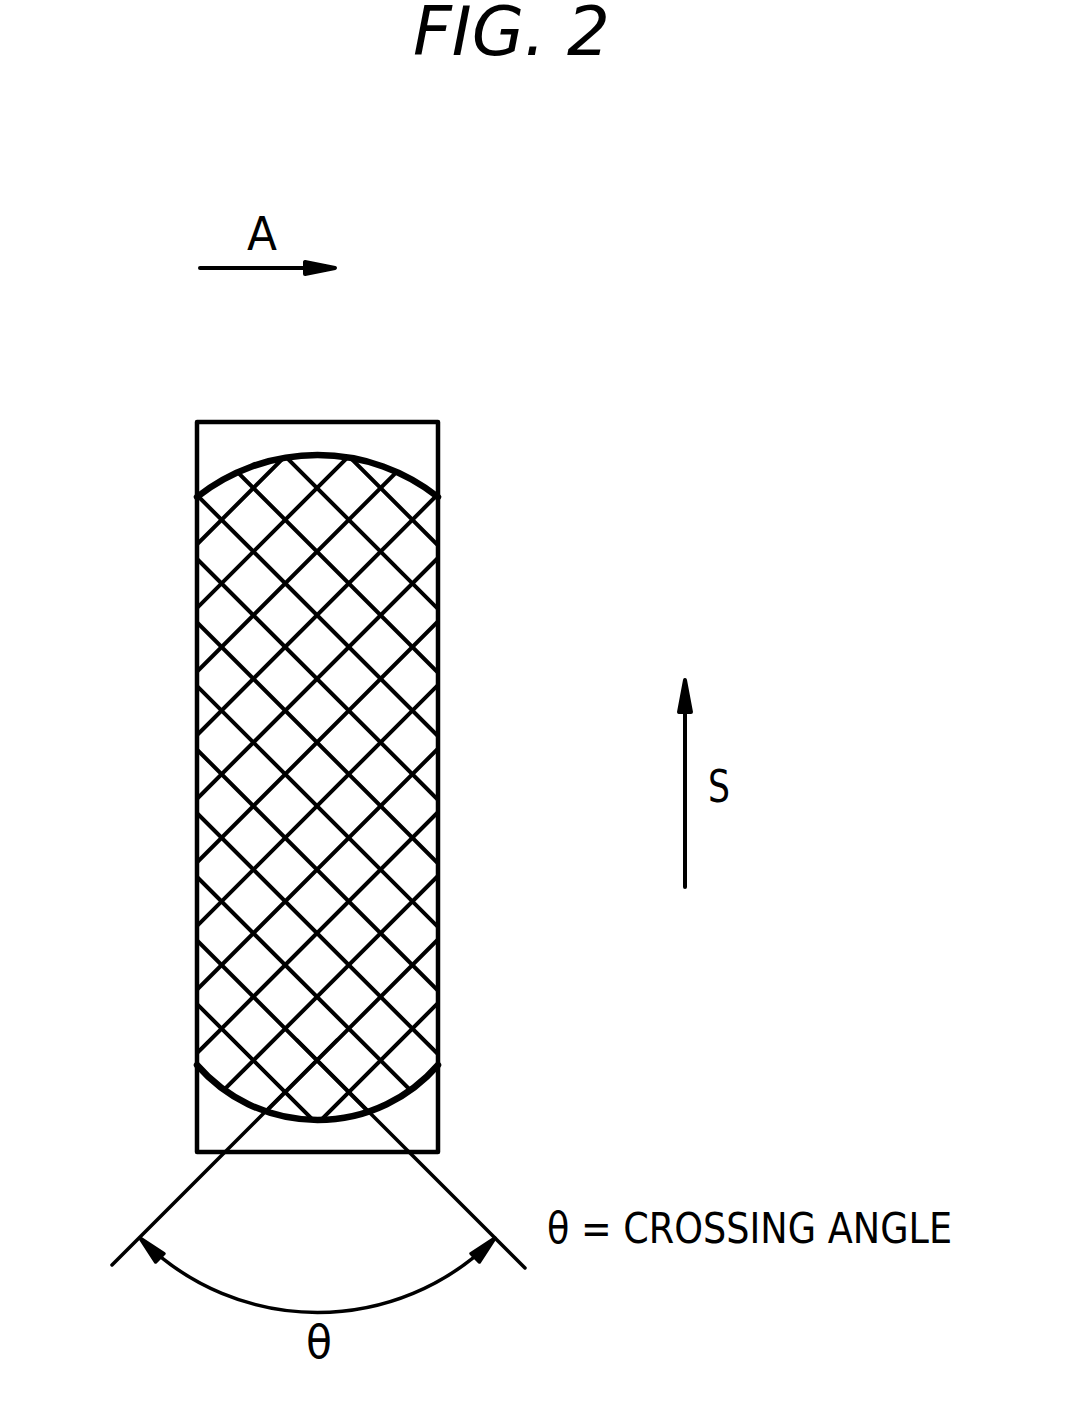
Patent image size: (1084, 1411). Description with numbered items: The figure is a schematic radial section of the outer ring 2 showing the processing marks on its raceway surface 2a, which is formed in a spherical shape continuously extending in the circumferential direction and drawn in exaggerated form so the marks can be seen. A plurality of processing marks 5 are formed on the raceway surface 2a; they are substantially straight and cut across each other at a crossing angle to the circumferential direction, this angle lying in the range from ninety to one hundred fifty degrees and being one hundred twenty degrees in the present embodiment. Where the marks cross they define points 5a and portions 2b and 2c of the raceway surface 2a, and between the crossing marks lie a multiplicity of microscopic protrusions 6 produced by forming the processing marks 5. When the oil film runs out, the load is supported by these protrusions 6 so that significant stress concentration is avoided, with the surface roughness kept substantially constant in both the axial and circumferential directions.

The outer ring 2 is at (413, 445).
The raceway surface 2a is at (317, 488).
The body portion of stent 2b is at (204, 743).
The axial direction of stent 2c is at (301, 592).
The processing marks 5 is at (414, 740).
The crossing portion of wires 5a is at (348, 516).
The microscopic protrusions 6 is at (290, 495).